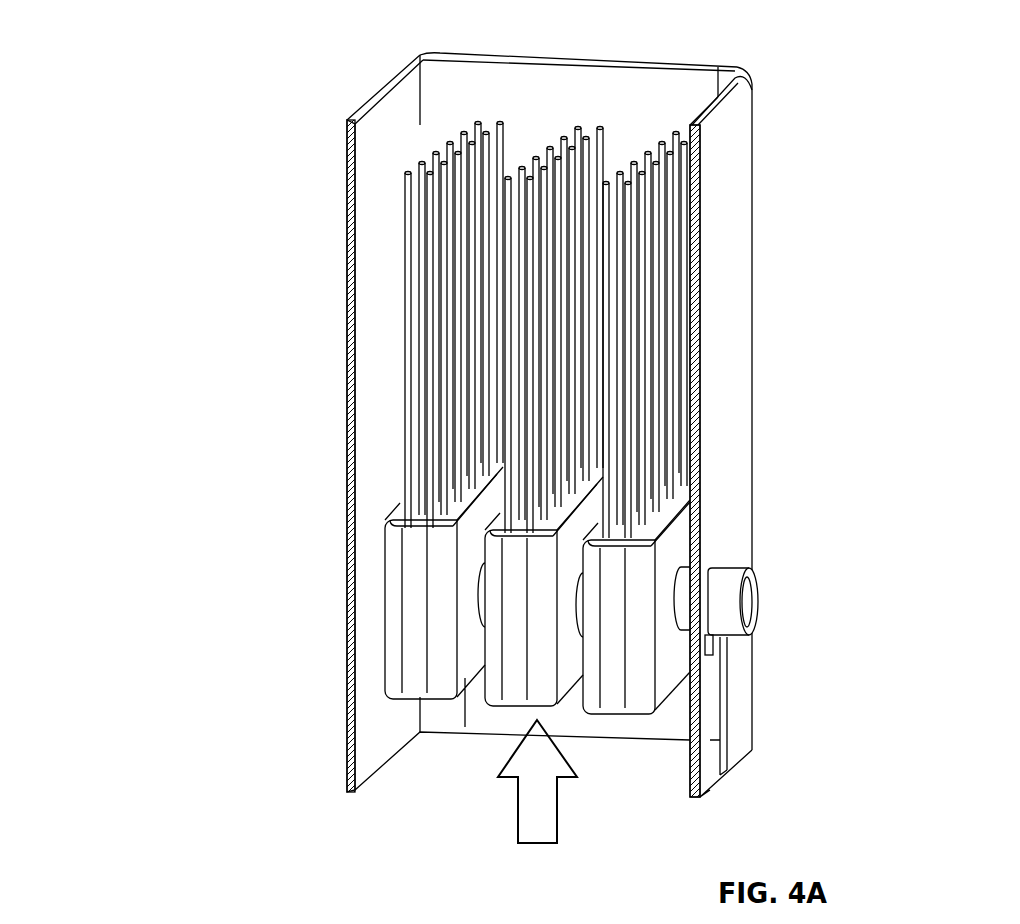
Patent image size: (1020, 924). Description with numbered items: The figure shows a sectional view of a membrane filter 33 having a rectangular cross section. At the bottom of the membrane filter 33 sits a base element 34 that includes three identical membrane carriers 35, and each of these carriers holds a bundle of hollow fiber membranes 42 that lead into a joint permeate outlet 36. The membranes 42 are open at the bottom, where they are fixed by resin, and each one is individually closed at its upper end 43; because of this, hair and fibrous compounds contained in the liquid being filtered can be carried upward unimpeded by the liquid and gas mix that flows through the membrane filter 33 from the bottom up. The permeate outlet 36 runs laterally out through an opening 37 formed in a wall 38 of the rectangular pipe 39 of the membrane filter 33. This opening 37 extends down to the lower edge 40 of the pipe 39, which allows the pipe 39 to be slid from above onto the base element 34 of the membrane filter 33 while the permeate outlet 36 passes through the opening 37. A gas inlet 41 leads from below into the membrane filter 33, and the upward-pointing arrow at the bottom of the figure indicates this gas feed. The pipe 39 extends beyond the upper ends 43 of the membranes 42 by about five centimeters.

The membrane filter 33 is at (158, 232).
The base element 34 is at (426, 447).
The membrane carriers 35 is at (610, 625).
The permeate outlet 36 is at (747, 603).
The opening 37 is at (715, 688).
The wall 38 is at (690, 778).
The rectangular pipe 39 is at (727, 302).
The lower edge 40 is at (735, 767).
The gas inlet 41 is at (532, 805).
The hollow fiber membranes 42 is at (483, 276).
The upper ends 43 is at (497, 132).